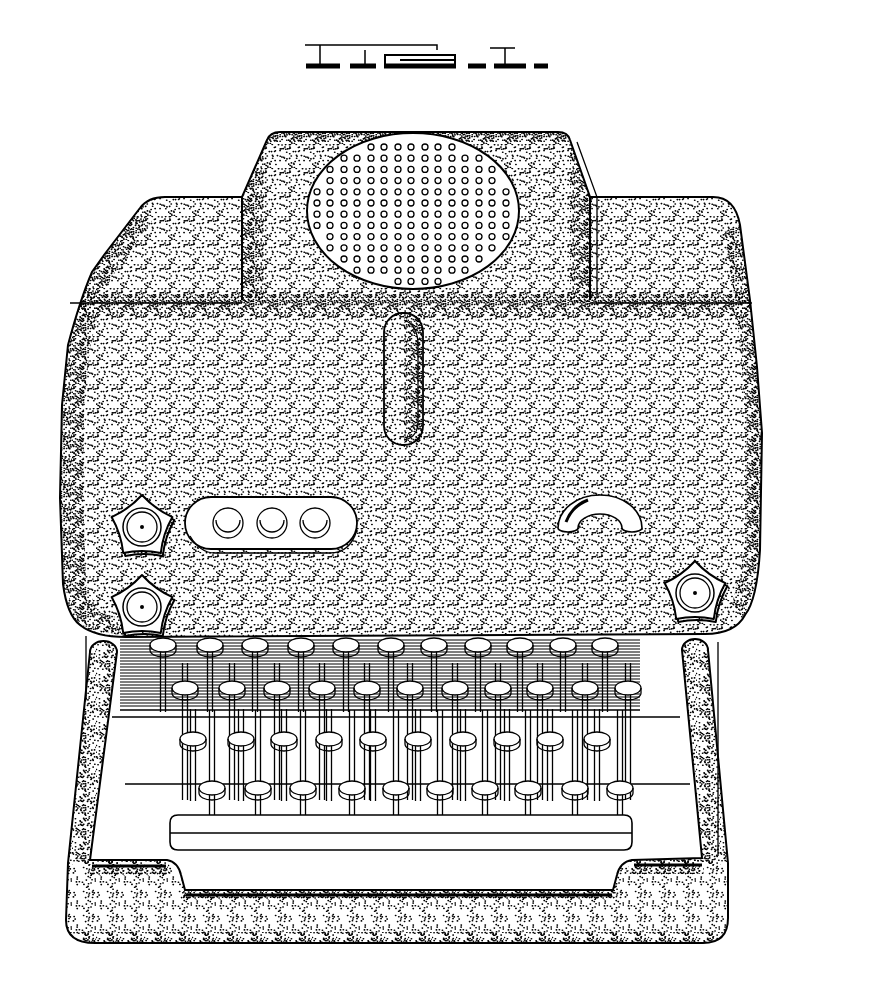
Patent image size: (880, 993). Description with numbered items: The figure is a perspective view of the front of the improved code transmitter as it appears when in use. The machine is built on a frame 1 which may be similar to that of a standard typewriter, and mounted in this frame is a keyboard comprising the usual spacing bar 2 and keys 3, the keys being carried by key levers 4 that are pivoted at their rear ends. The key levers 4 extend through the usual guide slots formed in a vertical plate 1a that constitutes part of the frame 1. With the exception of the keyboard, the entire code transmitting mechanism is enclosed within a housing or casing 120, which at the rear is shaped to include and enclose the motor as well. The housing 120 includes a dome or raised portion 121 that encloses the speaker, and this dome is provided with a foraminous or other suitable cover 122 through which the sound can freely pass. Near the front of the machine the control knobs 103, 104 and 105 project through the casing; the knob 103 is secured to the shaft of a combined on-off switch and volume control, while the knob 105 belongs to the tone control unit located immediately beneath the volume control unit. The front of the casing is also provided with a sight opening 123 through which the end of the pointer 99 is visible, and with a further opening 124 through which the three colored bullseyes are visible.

The frame 1 is at (82, 798).
The vertical plate 1a is at (153, 697).
The spacing bar 2 is at (561, 838).
The keys 3 is at (201, 742).
The key levers 4 is at (503, 755).
The pointer 99 is at (577, 506).
The control knob 103 is at (133, 531).
The control knob 104 is at (718, 623).
The control knob 105 is at (112, 614).
The housing 120 is at (726, 251).
The dome 121 is at (562, 162).
The foraminous cover 122 is at (395, 146).
The sight opening 123 is at (613, 520).
The opening 124 is at (287, 536).